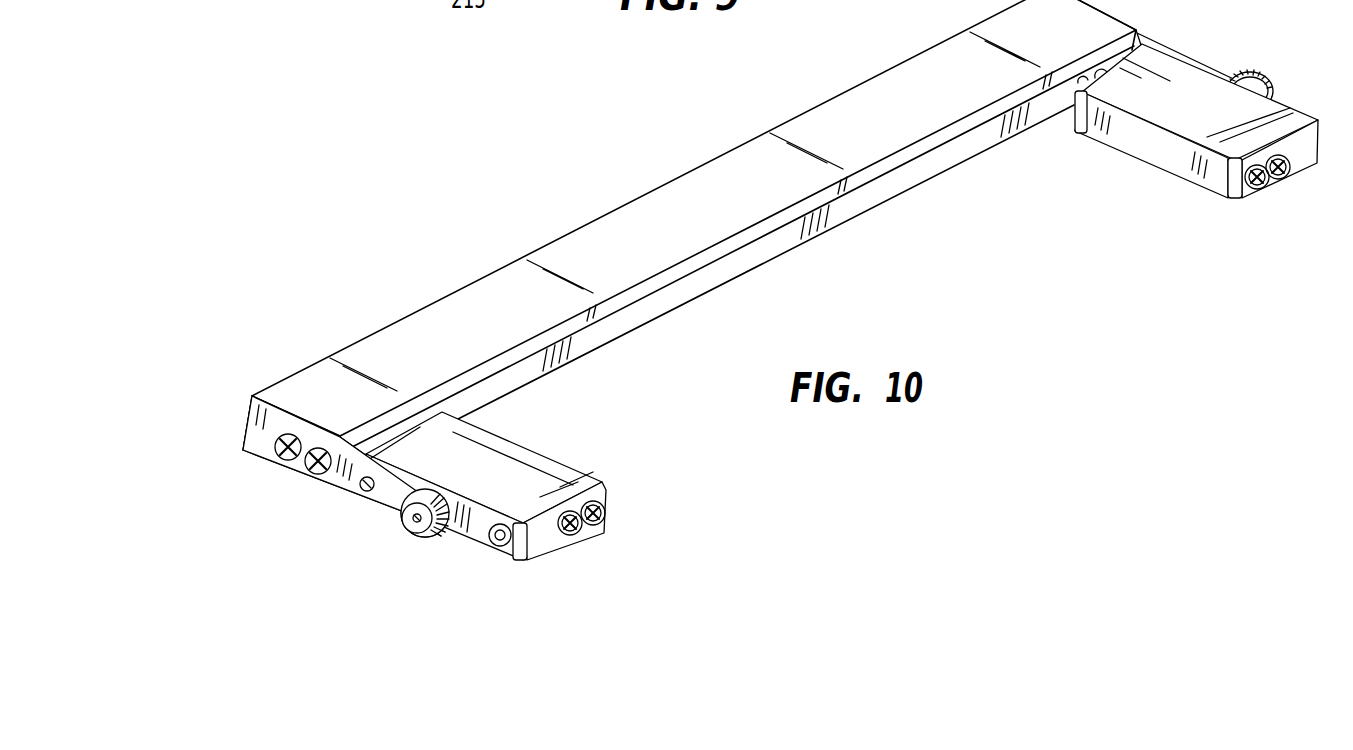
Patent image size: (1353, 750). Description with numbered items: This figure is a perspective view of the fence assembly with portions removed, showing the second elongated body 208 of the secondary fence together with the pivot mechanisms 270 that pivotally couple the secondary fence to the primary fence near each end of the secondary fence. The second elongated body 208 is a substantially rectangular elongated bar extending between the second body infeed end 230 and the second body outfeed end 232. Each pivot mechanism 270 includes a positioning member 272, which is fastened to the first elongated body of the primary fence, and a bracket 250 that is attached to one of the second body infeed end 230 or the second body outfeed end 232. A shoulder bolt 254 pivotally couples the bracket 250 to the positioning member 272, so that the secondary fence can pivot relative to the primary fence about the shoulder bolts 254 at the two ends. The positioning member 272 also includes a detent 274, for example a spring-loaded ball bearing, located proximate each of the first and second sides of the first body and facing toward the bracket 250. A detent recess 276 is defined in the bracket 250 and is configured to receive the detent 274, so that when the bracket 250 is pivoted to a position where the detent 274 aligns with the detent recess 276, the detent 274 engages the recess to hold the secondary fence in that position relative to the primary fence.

The second elongated body 208 is at (622, 205).
The second body infeed end 230 is at (282, 402).
The second body outfeed end 232 is at (1095, 8).
The bracket 250 is at (1150, 35).
The shoulder bolt 254 is at (1272, 90).
The pivot mechanism 270 is at (252, 479).
The positioning member 272 is at (1167, 153).
The detent 274 is at (540, 532).
The detent recess 276 is at (360, 491).